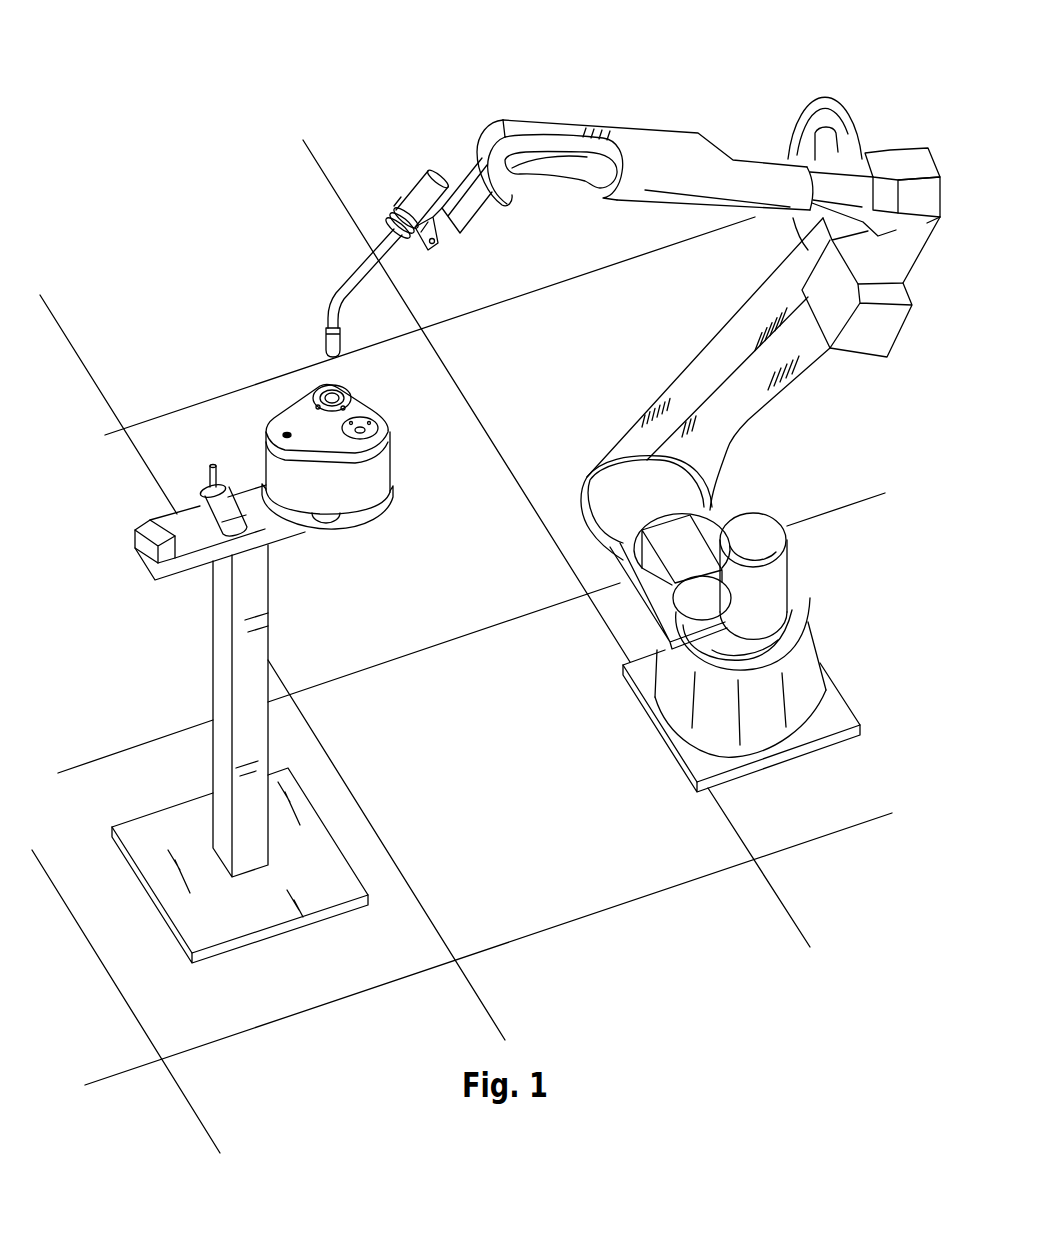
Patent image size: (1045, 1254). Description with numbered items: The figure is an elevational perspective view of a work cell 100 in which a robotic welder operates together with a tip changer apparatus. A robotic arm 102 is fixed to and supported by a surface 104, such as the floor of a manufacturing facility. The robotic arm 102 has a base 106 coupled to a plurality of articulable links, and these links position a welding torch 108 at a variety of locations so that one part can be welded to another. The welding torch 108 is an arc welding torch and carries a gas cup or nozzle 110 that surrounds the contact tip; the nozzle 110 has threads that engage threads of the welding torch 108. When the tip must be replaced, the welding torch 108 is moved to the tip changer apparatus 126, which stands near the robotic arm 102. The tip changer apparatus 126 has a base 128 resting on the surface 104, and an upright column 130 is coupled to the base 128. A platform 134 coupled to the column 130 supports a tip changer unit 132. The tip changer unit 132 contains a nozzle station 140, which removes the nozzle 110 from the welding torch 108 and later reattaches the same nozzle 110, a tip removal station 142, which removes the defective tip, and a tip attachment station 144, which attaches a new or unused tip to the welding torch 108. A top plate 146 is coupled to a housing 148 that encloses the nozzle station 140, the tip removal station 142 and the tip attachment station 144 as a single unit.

The work cell 100 is at (193, 145).
The robotic arm 102 is at (733, 133).
The surface 104 is at (605, 868).
The base 106 is at (832, 712).
The welding torch 108 is at (358, 268).
The gas cup or nozzle 110 is at (325, 337).
The tip changer apparatus 126 is at (374, 434).
The base 128 is at (313, 837).
The upright column 130 is at (220, 633).
The tip changer unit 132 is at (280, 477).
The platform 134 is at (180, 545).
The nozzle station 140 is at (362, 393).
The tip removal station 142 is at (405, 422).
The tip attachment station 144 is at (277, 420).
The top plate 146 is at (322, 437).
The housing 148 is at (308, 488).